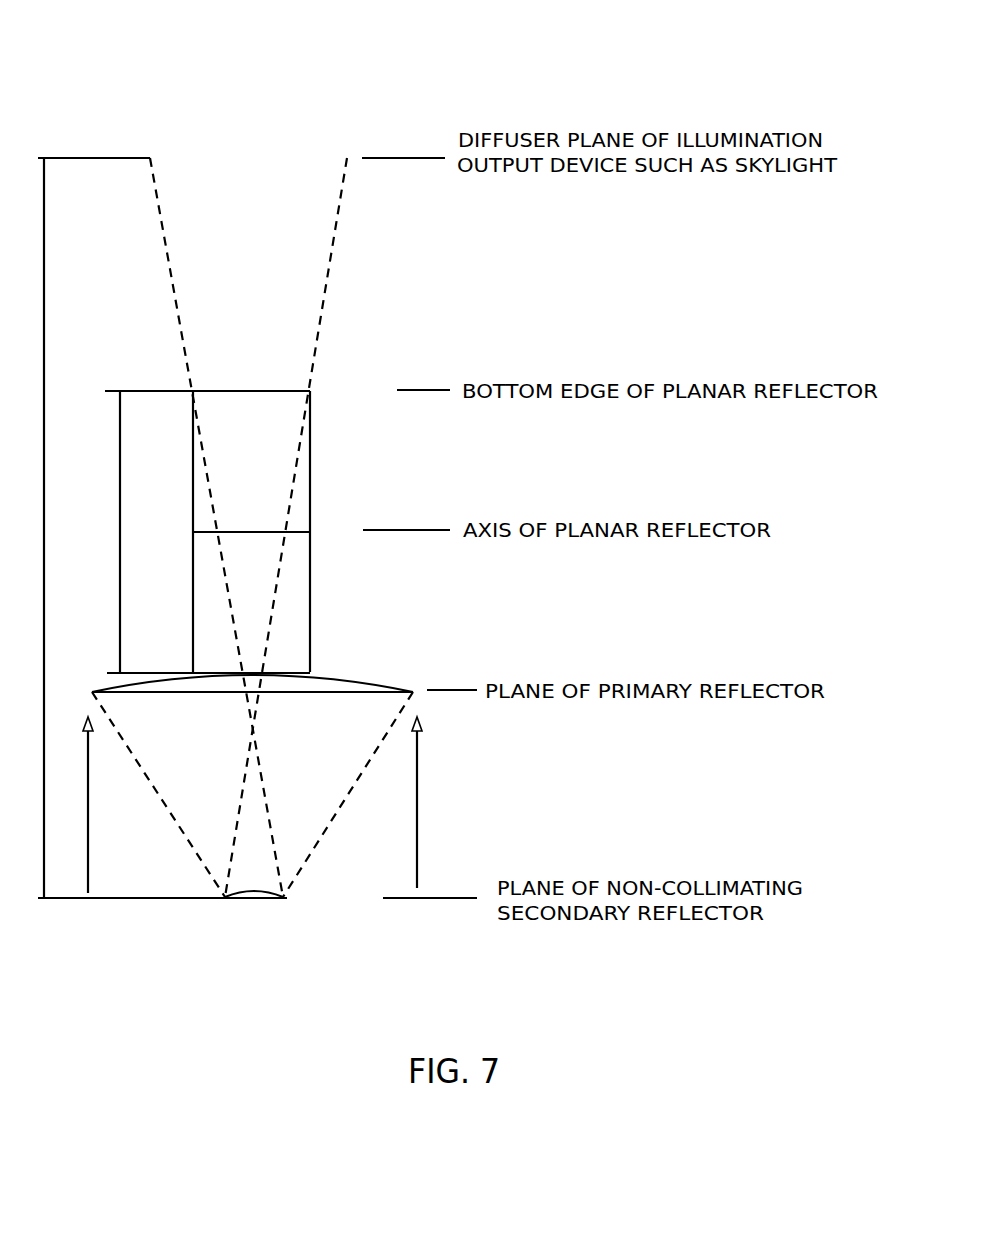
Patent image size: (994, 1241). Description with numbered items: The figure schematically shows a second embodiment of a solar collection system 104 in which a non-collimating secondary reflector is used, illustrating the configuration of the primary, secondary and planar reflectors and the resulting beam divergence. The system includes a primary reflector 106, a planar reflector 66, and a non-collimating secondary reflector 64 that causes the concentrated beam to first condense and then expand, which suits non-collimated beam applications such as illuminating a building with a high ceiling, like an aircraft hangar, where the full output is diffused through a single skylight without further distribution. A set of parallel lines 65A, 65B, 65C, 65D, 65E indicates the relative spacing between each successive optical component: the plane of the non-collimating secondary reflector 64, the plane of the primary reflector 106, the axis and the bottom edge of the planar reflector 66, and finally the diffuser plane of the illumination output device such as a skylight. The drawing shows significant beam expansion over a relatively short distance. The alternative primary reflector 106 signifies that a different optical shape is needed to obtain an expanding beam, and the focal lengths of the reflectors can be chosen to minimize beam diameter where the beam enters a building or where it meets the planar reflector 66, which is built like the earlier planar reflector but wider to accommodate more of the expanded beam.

The solar collection system 104 is at (178, 70).
The parallel line 65E is at (423, 118).
The parallel line 65D is at (454, 350).
The planar reflector 66 is at (244, 532).
The parallel line 65C is at (429, 490).
The parallel line 65B is at (483, 651).
The primary reflector 106 is at (254, 668).
The parallel line 65A is at (451, 859).
The non-collimating secondary reflector 64 is at (290, 910).